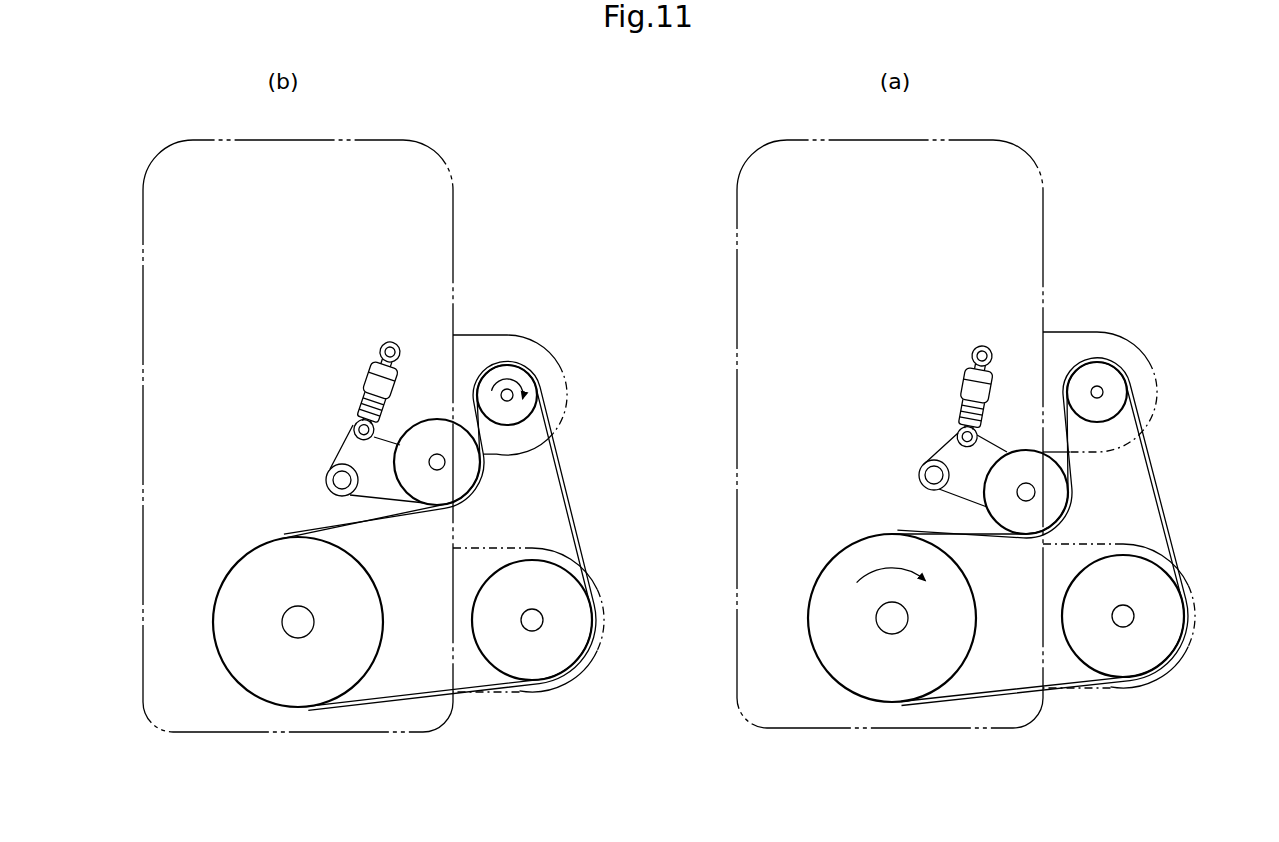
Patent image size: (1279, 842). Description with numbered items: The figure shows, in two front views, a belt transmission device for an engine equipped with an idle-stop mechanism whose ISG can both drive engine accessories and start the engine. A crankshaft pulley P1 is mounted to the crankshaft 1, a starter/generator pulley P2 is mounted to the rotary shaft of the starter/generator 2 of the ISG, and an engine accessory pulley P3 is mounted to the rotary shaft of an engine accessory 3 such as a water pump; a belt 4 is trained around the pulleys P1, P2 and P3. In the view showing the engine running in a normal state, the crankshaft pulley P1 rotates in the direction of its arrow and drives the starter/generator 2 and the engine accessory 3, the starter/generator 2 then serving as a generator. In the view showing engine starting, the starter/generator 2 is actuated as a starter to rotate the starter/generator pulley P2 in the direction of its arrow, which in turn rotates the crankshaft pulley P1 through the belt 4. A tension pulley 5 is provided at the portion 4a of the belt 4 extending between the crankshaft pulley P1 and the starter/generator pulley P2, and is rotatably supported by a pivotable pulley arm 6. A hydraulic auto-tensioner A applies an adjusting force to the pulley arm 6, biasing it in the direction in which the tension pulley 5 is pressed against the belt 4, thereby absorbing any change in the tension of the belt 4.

The crankshaft 1 is at (303, 627).
The starter/generator 2 is at (490, 343).
The engine accessory 3 is at (598, 608).
The belt 4 is at (562, 477).
The portion of the belt 4a is at (980, 537).
The tension pulley 5 is at (465, 477).
The pulley arm 6 is at (350, 457).
The hydraulic auto-tensioner A is at (352, 385).
The crankshaft pulley P1 is at (295, 693).
The starter/generator pulley P2 is at (527, 378).
The engine accessory pulley P3 is at (572, 650).